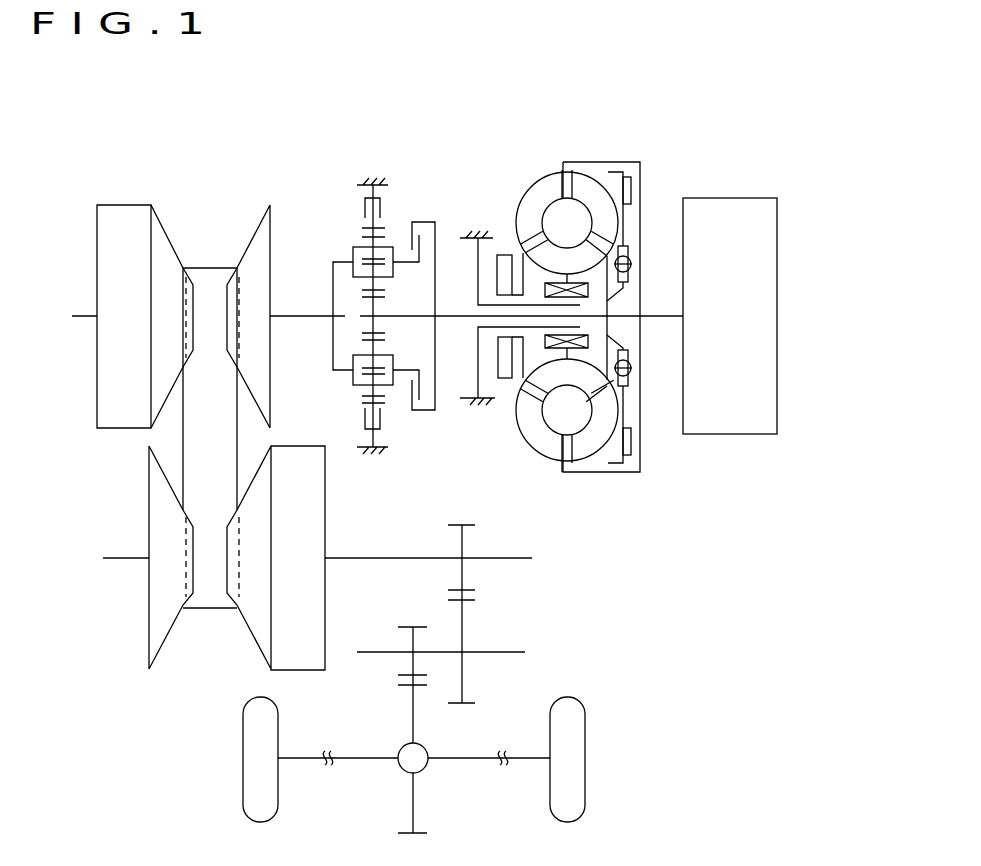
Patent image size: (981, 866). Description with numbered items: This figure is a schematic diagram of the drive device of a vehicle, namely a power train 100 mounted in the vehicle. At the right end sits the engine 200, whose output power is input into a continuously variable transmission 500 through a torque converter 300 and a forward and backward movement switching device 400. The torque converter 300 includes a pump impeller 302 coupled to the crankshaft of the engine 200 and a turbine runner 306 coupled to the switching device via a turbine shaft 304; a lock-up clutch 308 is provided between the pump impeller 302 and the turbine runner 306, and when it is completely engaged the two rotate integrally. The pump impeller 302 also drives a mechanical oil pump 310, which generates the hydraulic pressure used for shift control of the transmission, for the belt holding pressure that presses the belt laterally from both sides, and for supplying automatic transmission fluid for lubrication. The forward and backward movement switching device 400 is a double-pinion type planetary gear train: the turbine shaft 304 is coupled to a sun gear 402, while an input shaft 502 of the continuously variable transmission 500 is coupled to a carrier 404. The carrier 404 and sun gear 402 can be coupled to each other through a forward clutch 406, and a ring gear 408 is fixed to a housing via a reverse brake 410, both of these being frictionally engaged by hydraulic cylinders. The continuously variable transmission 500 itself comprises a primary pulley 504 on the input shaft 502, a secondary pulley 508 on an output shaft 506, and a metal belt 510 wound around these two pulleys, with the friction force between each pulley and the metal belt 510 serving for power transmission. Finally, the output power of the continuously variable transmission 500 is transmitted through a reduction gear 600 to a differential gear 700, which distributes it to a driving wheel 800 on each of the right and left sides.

The power train 100 is at (741, 137).
The engine 200 is at (765, 265).
The torque converter 300 is at (572, 148).
The pump impeller 302 is at (537, 437).
The turbine shaft 304 is at (453, 322).
The turbine runner 306 is at (587, 445).
The lock-up clutch 308 is at (633, 187).
The mechanical oil pump 310 is at (503, 253).
The forward and backward movement switching device 400 is at (340, 182).
The sun gear 402 is at (375, 328).
The carrier 404 is at (353, 248).
The forward clutch 406 is at (424, 210).
The ring gear 408 is at (367, 408).
The reverse brake 410 is at (388, 208).
The continuously variable transmission 500 is at (208, 652).
The input shaft 502 is at (298, 313).
The primary pulley 504 is at (110, 228).
The output shaft 506 is at (377, 560).
The secondary pulley 508 is at (315, 520).
The metal belt 510 is at (212, 263).
The reduction gear 600 is at (518, 618).
The differential gear 700 is at (400, 765).
The driving wheel 800 is at (255, 780).